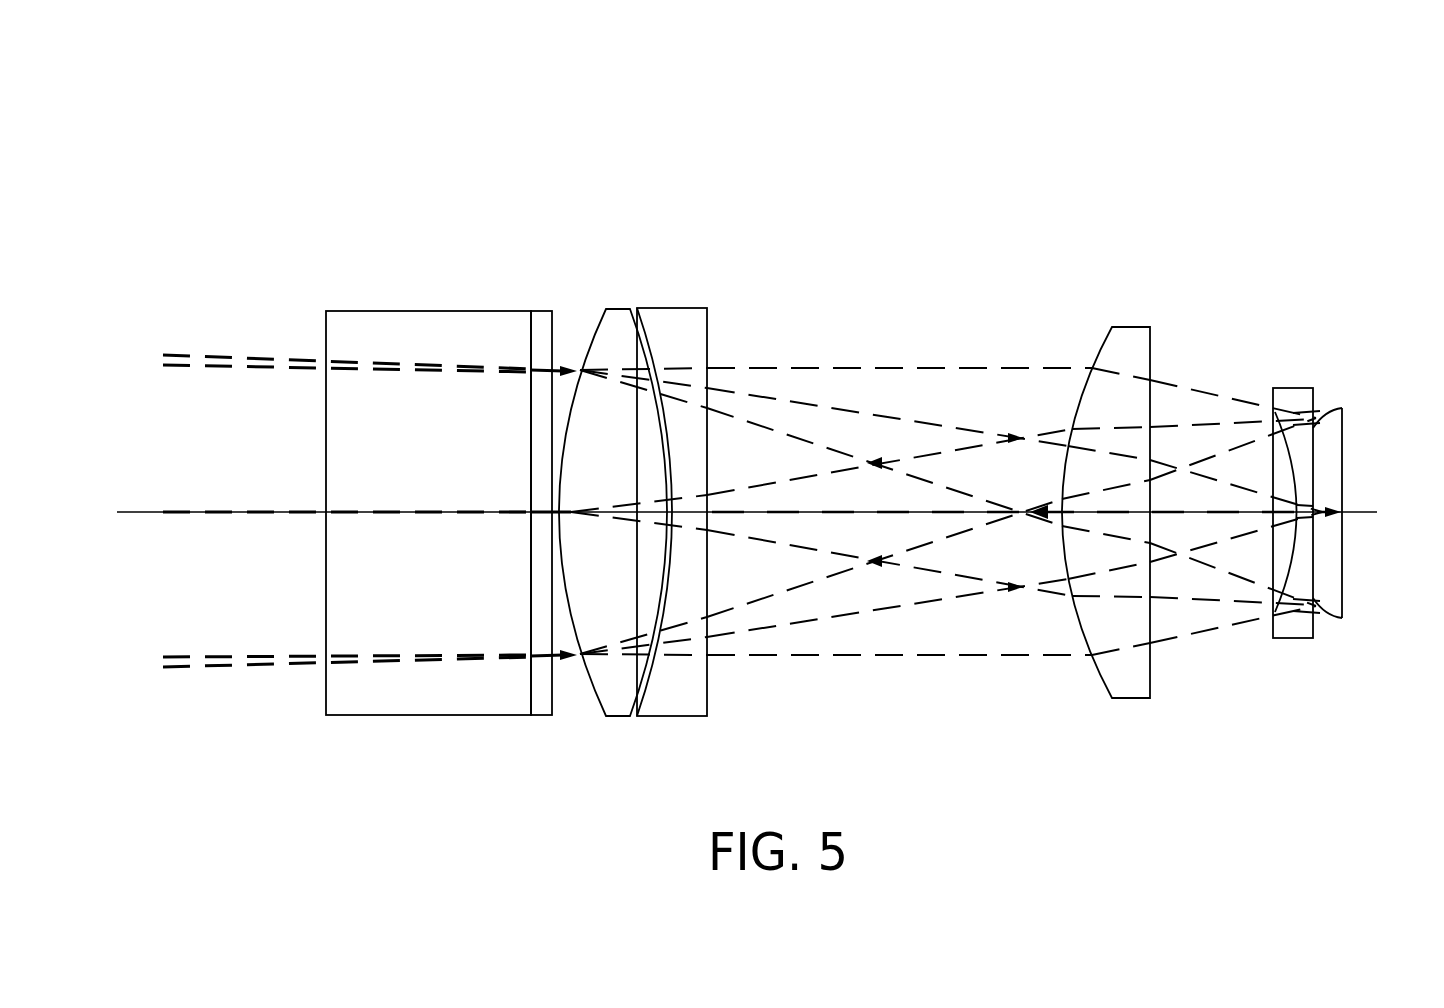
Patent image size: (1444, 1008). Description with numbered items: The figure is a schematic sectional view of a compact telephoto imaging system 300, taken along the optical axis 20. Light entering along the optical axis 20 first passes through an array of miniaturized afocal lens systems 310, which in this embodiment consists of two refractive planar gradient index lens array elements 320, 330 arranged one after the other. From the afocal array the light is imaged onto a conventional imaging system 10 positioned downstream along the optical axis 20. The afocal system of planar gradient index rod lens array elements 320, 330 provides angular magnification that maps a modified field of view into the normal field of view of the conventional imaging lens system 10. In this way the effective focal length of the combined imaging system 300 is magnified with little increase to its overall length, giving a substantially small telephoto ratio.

The compact telephoto imaging system 300 is at (270, 131).
The array of miniaturized afocal lens systems 310 is at (573, 303).
The refractive planar gradient index lens array element 320 is at (447, 715).
The refractive planar gradient index lens array element 330 is at (540, 715).
The conventional imaging system 10 is at (1367, 303).
The optical axis 20 is at (152, 512).